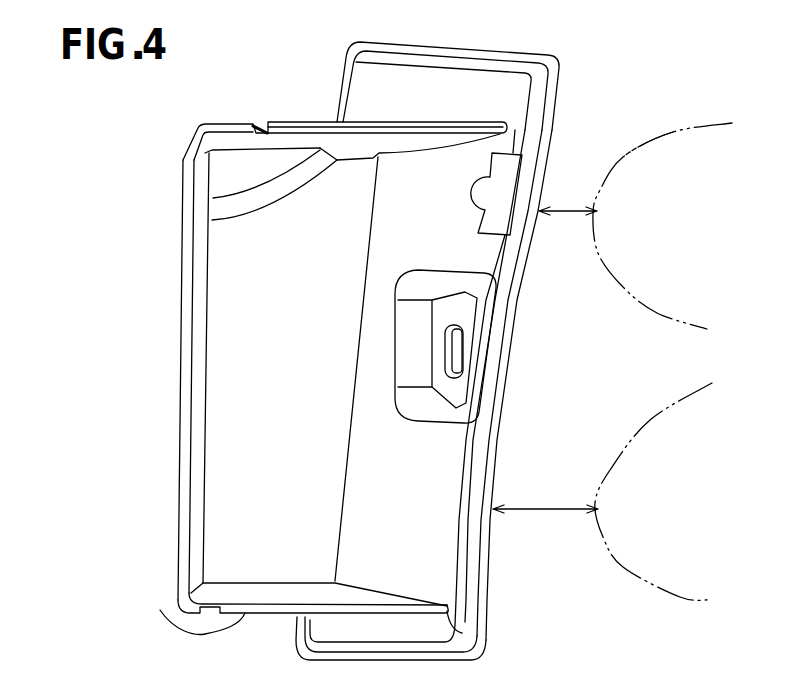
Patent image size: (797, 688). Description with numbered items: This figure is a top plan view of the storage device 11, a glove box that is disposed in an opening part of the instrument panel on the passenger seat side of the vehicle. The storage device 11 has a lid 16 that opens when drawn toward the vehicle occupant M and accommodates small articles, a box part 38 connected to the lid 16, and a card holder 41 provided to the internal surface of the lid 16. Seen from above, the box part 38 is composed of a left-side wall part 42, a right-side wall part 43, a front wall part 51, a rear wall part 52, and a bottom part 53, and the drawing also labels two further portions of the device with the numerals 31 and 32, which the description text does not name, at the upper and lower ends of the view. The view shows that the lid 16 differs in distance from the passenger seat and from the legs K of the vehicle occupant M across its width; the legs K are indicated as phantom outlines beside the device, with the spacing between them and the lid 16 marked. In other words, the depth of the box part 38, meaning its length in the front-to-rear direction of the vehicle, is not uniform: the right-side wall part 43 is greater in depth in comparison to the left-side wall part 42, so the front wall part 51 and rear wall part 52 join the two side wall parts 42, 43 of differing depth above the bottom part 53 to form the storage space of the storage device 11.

The storage device 11 is at (158, 200).
The lid 16 is at (505, 385).
The upper frame portion 31 is at (477, 50).
The lower frame portion 32 is at (430, 653).
The box part 38 is at (167, 278).
The card holder 41 is at (513, 187).
The left-side wall part 42 is at (160, 610).
The right-side wall part 43 is at (288, 121).
The front wall part 51 is at (413, 457).
The rear wall part 52 is at (180, 428).
The bottom part 53 is at (244, 485).
The legs K is at (627, 152).
The vehicle occupant M is at (712, 120).